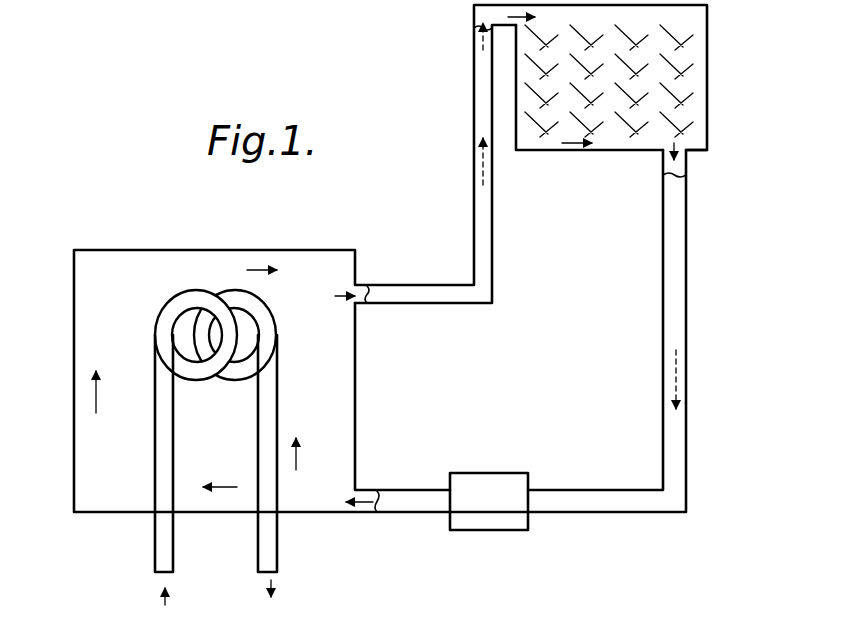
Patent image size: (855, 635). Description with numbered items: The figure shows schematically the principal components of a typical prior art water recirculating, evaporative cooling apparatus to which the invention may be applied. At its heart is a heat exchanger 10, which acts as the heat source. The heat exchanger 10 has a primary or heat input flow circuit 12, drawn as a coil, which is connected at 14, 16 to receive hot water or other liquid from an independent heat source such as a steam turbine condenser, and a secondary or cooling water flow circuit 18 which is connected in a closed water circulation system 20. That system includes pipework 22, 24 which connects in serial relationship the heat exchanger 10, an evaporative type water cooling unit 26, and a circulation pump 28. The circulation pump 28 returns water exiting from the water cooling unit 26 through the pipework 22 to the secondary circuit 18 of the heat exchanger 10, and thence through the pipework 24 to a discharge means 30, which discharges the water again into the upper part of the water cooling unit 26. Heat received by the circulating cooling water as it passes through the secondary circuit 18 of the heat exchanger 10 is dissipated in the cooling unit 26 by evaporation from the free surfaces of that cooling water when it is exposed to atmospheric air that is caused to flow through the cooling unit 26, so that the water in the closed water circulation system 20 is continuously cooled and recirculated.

The heat exchanger 10 is at (66, 419).
The primary or heat input flow circuit 12 is at (155, 438).
The connection of primary circuit 14 is at (175, 556).
The connection of primary circuit 16 is at (260, 565).
The secondary or cooling water flow circuit 18 is at (345, 272).
The closed water circulation system 20 is at (505, 295).
The pipework 22 is at (663, 328).
The pipework 24 is at (495, 238).
The evaporative type water cooling unit 26 is at (620, 150).
The circulation pump 28 is at (528, 473).
The discharge means 30 is at (473, 2).